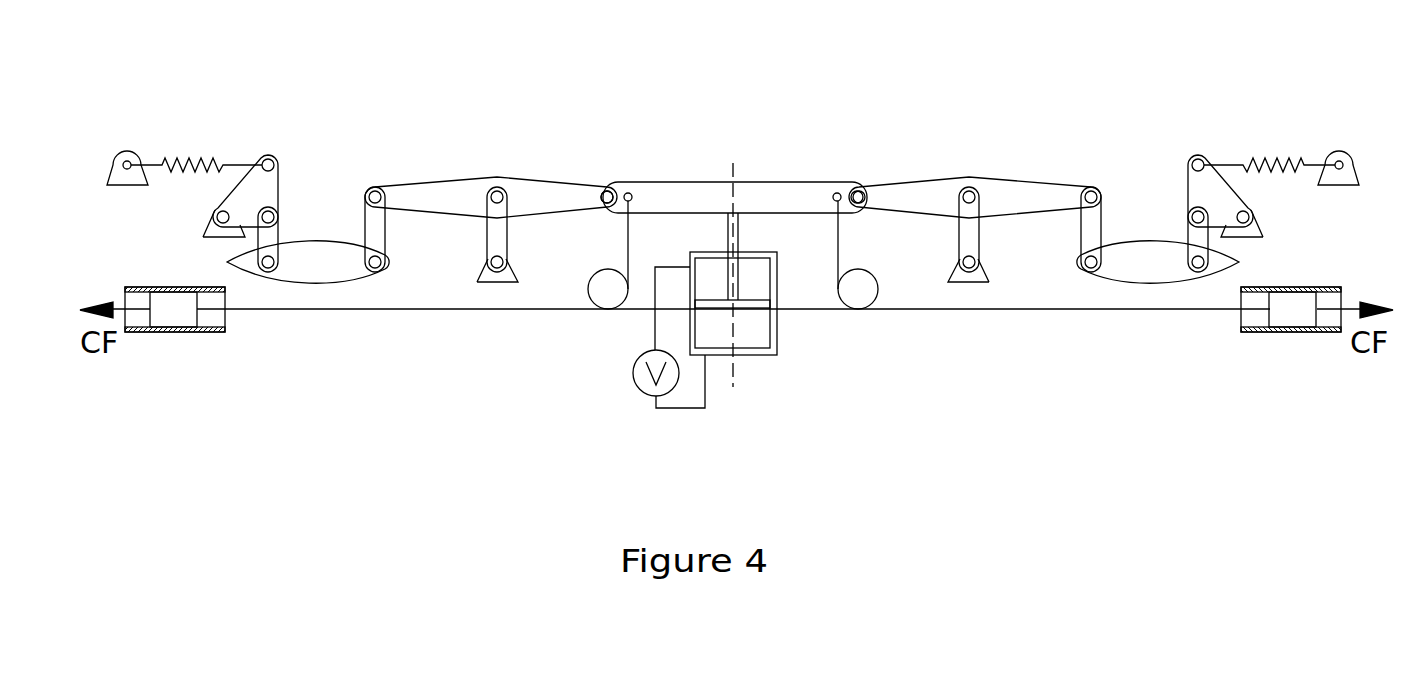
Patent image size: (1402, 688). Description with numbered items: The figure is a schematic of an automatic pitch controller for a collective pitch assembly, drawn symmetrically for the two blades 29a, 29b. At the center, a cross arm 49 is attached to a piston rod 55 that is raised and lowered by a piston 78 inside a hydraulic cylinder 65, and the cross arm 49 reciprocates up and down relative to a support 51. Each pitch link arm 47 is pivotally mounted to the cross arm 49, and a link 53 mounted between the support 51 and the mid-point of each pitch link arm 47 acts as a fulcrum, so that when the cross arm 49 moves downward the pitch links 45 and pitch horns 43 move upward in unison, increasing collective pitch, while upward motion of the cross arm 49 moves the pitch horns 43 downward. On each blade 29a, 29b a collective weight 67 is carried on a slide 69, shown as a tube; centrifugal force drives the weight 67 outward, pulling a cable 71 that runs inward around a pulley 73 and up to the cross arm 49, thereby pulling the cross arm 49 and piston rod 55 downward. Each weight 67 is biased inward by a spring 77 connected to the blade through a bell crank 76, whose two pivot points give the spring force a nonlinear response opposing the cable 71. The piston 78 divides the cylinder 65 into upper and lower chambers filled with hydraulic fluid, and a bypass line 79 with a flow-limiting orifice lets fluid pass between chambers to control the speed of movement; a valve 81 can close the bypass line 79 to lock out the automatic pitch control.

The blade 29a is at (1165, 283).
The blade 29b is at (333, 285).
The pitch horn 43 is at (1095, 248).
The pitch link 45 is at (1103, 223).
The pitch link arm 47 is at (920, 178).
The cross arm 49 is at (785, 182).
The support 51 is at (968, 283).
The link 53 is at (980, 237).
The piston rod 55 is at (728, 237).
The hydraulic cylinder 65 is at (757, 358).
The collective weight 67 is at (160, 333).
The slide 69 is at (217, 333).
The cable 71 is at (300, 313).
The pulley 73 is at (595, 297).
The bell crank 76 is at (253, 178).
The spring 77 is at (173, 153).
The piston 78 is at (757, 310).
The bypass line 79 is at (677, 408).
The valve 81 is at (635, 392).